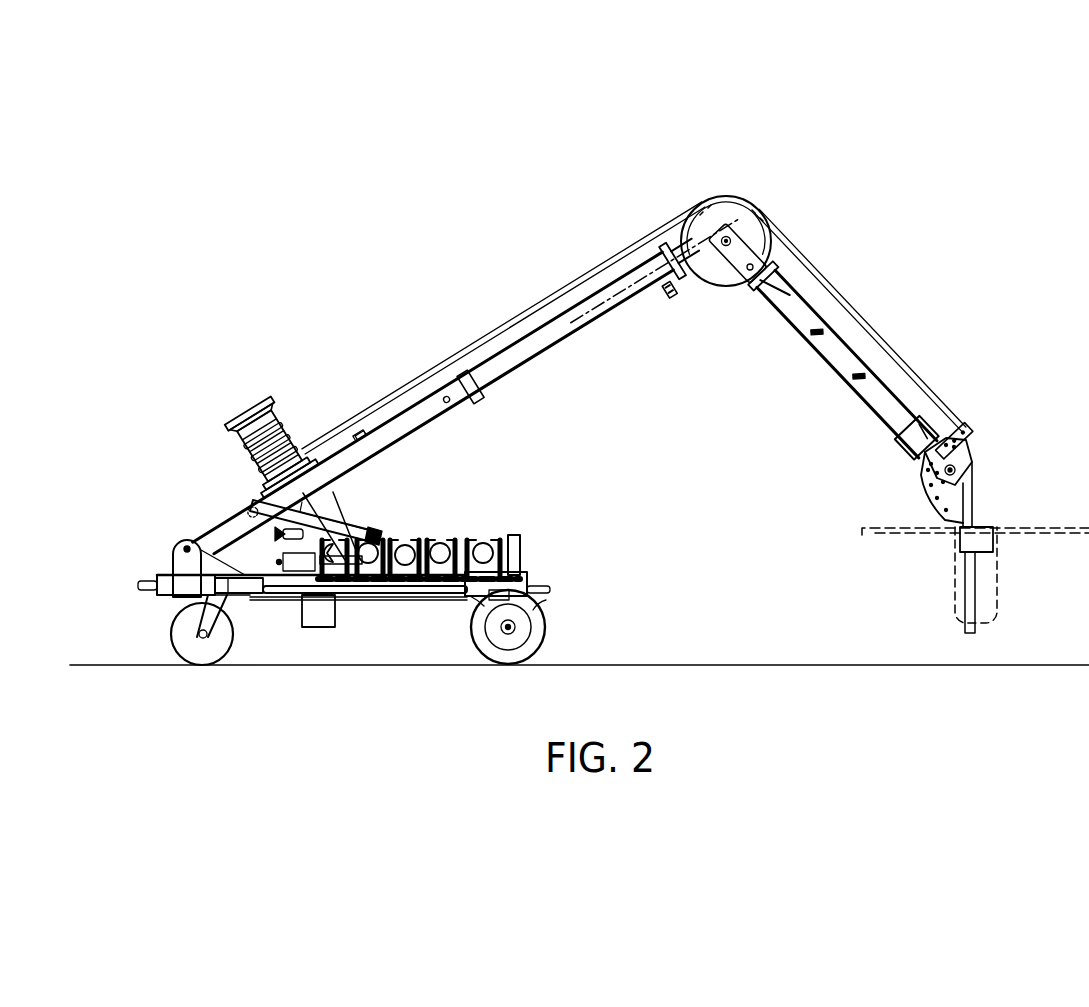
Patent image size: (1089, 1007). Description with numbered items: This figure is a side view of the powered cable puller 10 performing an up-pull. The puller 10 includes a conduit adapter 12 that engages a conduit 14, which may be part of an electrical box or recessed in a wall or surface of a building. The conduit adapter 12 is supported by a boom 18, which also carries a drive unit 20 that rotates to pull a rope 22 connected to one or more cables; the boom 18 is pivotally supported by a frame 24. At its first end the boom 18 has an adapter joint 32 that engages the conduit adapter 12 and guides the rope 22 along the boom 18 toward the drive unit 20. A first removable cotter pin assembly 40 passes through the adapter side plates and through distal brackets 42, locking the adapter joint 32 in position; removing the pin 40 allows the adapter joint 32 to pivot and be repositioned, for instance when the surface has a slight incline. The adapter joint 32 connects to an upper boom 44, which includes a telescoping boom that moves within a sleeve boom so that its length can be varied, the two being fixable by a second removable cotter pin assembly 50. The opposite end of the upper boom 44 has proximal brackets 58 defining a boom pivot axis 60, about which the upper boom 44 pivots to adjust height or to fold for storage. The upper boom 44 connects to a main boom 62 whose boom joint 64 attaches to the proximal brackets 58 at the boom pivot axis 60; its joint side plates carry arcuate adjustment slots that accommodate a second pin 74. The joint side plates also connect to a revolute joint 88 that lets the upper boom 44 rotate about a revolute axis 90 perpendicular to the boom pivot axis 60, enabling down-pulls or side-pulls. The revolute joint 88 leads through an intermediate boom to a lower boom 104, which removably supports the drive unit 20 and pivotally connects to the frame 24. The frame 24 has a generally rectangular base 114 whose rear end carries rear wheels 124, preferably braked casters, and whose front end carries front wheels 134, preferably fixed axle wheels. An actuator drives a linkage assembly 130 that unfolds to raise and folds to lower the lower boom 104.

The powered cable puller 10 is at (205, 173).
The conduit adapter 12 is at (495, 538).
The conduit 14 is at (956, 584).
The boom 18 is at (502, 350).
The drive unit 20 is at (264, 410).
The rope 22 is at (418, 377).
The frame 24 is at (535, 567).
The adapter joint 32 is at (943, 506).
The first removable cotter pin assembly 40 is at (938, 438).
The distal brackets 42 is at (966, 449).
The upper boom 44 is at (810, 318).
The second removable cotter pin assembly 50 is at (888, 420).
The proximal brackets 58 is at (749, 222).
The boom pivot axis 60 is at (723, 236).
The main boom 62 is at (606, 300).
The boom joint 64 is at (749, 272).
The second pin 74 is at (776, 257).
The revolute joint 88 is at (670, 290).
The revolute axis 90 is at (621, 302).
The lower boom 104 is at (362, 435).
The base 114 is at (253, 592).
The rear wheels 124 is at (178, 636).
The linkage assembly 130 is at (342, 527).
The front wheels 134 is at (530, 652).